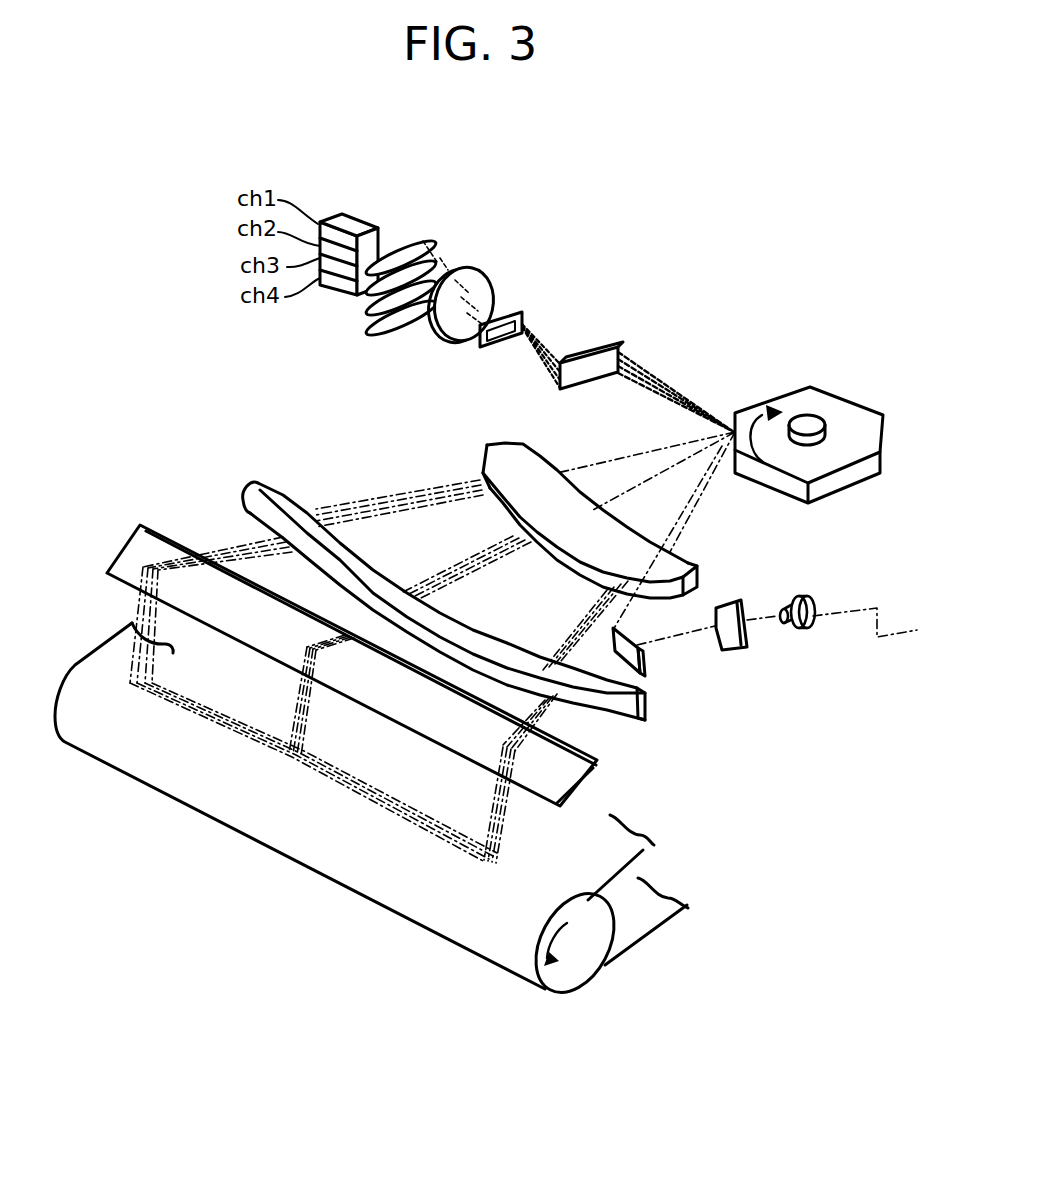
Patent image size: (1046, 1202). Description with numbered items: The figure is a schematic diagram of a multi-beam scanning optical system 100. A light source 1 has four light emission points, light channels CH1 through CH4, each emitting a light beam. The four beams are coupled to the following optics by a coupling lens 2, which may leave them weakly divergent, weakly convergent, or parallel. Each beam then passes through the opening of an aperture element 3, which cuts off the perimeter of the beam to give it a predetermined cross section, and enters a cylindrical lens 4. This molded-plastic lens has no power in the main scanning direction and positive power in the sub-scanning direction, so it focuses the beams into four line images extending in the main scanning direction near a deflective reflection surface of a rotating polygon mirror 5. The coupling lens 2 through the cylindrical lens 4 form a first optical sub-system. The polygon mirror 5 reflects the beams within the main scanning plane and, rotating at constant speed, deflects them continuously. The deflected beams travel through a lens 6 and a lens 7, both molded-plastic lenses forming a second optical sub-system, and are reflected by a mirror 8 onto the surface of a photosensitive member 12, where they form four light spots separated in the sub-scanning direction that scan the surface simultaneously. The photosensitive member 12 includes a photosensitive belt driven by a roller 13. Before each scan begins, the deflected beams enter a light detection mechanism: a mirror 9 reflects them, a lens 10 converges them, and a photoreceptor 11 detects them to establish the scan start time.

The multi-beam scanning optical system 100 is at (651, 214).
The light source 1 is at (353, 220).
The coupling lens 2 is at (453, 270).
The aperture element 3 is at (511, 316).
The cylindrical lens 4 is at (605, 345).
The polygon mirror 5 is at (827, 408).
The lens 6 is at (688, 584).
The lens 7 is at (283, 500).
The mirror 8 is at (137, 546).
The mirror 9 is at (637, 673).
The lens 10 is at (746, 648).
The photoreceptor 11 is at (806, 631).
The photosensitive member 12 is at (640, 848).
The roller 13 is at (568, 980).